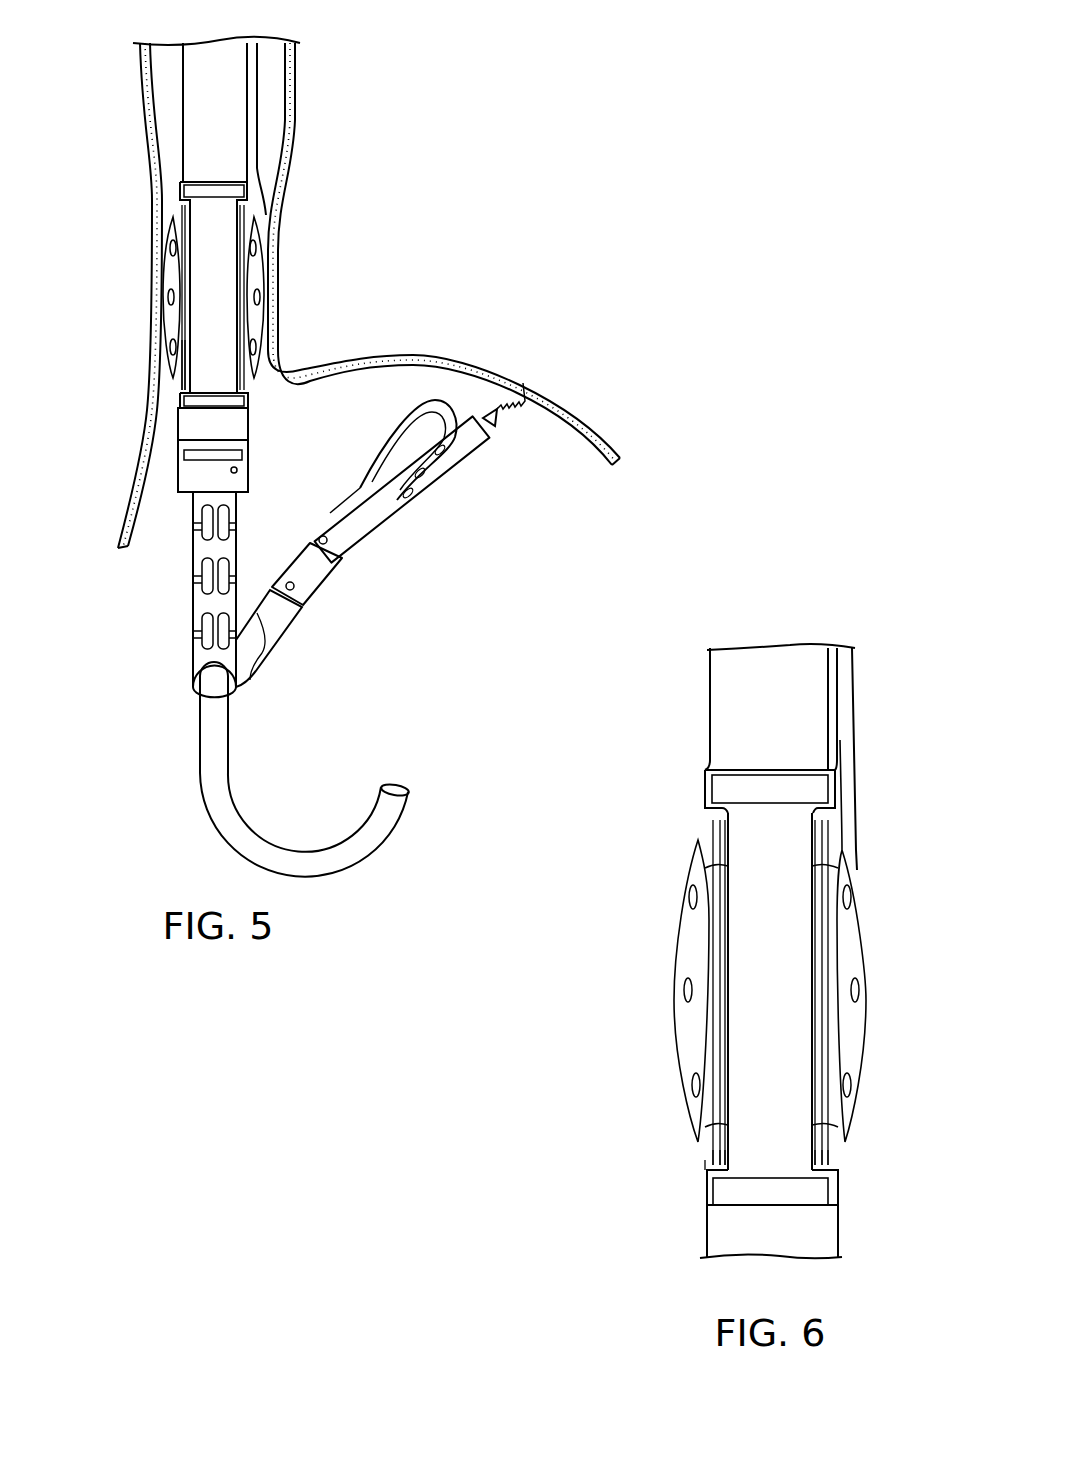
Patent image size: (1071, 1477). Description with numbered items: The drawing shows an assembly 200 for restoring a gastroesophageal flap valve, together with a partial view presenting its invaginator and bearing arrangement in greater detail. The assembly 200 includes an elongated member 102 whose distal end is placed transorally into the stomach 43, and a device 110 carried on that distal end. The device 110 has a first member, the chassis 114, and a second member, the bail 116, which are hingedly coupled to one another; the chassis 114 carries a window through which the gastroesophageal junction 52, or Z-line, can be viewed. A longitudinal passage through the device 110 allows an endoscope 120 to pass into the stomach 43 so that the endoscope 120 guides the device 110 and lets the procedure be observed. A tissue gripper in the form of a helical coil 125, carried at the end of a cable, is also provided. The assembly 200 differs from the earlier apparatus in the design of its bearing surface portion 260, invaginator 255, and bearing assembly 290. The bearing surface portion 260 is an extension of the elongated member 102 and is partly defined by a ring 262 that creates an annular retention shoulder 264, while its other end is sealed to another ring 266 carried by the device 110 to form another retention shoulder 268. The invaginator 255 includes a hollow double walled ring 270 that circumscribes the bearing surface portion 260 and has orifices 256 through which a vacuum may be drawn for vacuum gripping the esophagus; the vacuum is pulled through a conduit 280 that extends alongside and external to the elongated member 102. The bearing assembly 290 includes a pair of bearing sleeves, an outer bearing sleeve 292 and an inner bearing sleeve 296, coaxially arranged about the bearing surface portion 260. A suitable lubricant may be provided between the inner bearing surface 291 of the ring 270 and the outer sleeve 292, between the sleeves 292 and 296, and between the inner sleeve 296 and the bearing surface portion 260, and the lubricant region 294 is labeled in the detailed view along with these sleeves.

In FIG. 5, the stomach 43 is at (607, 405).
In FIG. 5, the gastroesophageal junction 52 is at (163, 318).
In FIG. 5, the elongated member 102 is at (171, 120).
In FIG. 6, the elongated member 102 is at (683, 705).
In FIG. 5, the device 110 is at (304, 540).
In FIG. 6, the device 110 is at (738, 1232).
In FIG. 5, the chassis 114 is at (247, 537).
In FIG. 5, the bail 116 is at (347, 593).
In FIG. 5, the endoscope 120 is at (215, 800).
In FIG. 5, the helical coil 125 is at (505, 400).
In FIG. 5, the assembly 200 is at (223, 769).
In FIG. 5, the invaginator 255 is at (200, 315).
In FIG. 6, the invaginator 255 is at (748, 976).
In FIG. 5, the orifices 256 is at (172, 248).
In FIG. 6, the orifices 256 is at (693, 897).
In FIG. 5, the bearing surface portion 260 is at (215, 220).
In FIG. 6, the bearing surface portion 260 is at (740, 938).
In FIG. 5, the ring 262 is at (222, 190).
In FIG. 6, the ring 262 is at (727, 782).
In FIG. 5, the annular retention shoulder 264 is at (180, 190).
In FIG. 6, the annular retention shoulder 264 is at (705, 795).
In FIG. 5, the ring 266 is at (247, 398).
In FIG. 6, the ring 266 is at (735, 1198).
In FIG. 5, the retention shoulder 268 is at (247, 405).
In FIG. 6, the retention shoulder 268 is at (838, 1172).
In FIG. 5, the hollow double walled ring 270 is at (167, 333).
In FIG. 6, the hollow double walled ring 270 is at (685, 1025).
In FIG. 5, the conduit 280 is at (250, 138).
In FIG. 6, the conduit 280 is at (850, 783).
In FIG. 5, the bearing assembly 290 is at (168, 380).
In FIG. 6, the bearing assembly 290 is at (695, 1168).
In FIG. 6, the inner bearing surface 291 is at (710, 1048).
In FIG. 6, the outer bearing sleeve 292 is at (712, 1160).
In FIG. 6, the arc 294 is at (834, 1115).
In FIG. 6, the inner bearing sleeve 296 is at (826, 1156).